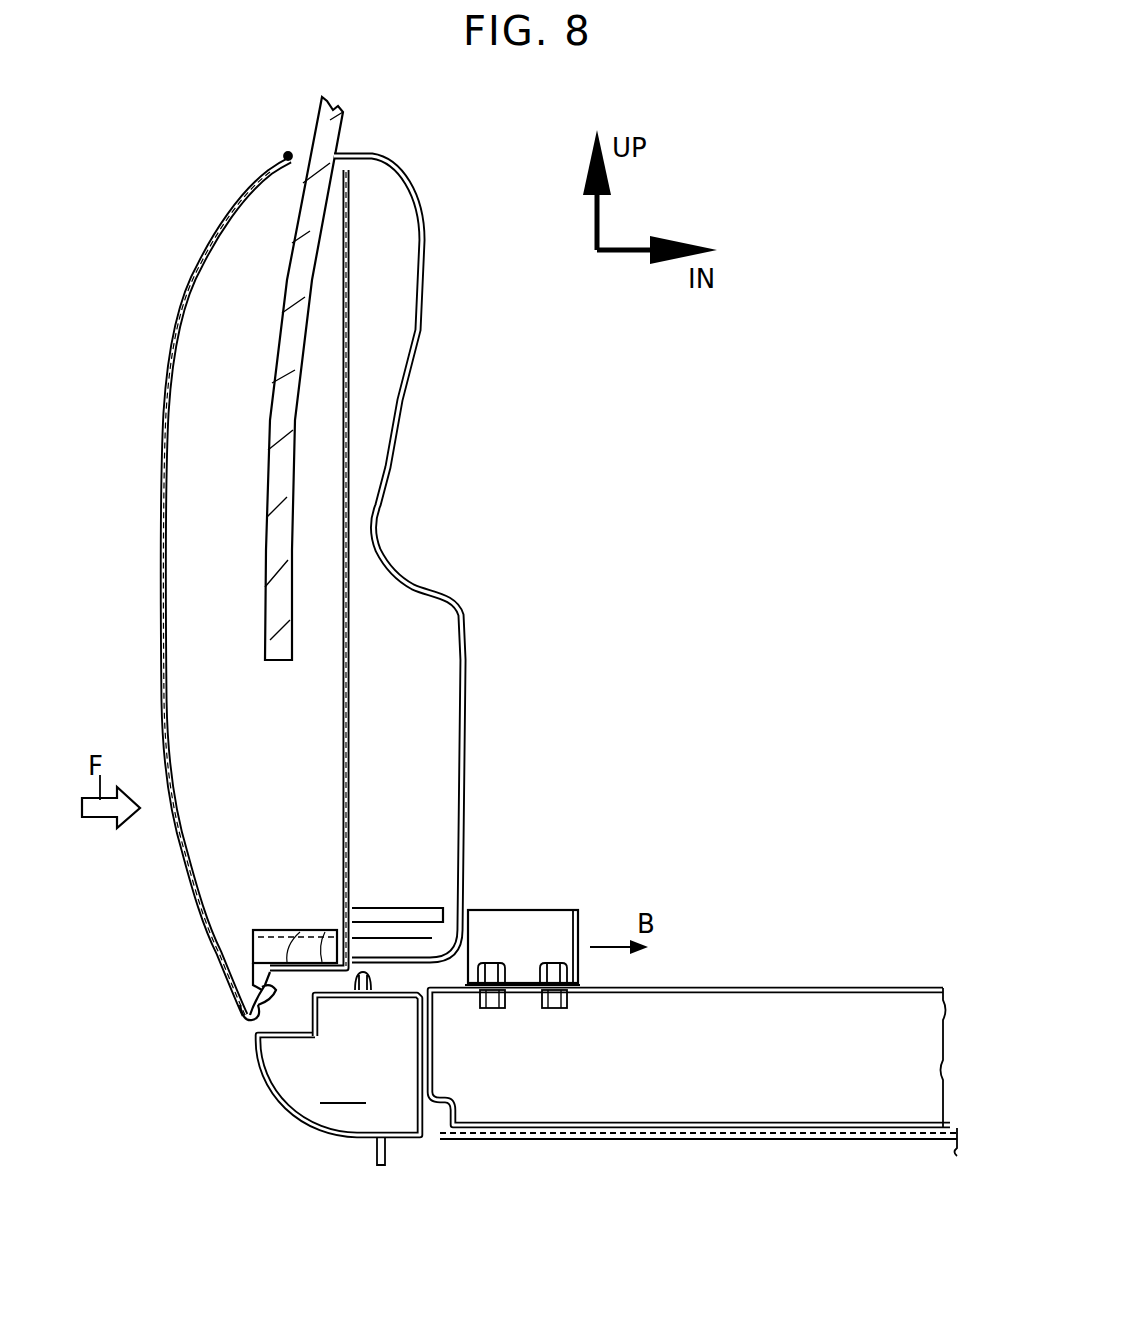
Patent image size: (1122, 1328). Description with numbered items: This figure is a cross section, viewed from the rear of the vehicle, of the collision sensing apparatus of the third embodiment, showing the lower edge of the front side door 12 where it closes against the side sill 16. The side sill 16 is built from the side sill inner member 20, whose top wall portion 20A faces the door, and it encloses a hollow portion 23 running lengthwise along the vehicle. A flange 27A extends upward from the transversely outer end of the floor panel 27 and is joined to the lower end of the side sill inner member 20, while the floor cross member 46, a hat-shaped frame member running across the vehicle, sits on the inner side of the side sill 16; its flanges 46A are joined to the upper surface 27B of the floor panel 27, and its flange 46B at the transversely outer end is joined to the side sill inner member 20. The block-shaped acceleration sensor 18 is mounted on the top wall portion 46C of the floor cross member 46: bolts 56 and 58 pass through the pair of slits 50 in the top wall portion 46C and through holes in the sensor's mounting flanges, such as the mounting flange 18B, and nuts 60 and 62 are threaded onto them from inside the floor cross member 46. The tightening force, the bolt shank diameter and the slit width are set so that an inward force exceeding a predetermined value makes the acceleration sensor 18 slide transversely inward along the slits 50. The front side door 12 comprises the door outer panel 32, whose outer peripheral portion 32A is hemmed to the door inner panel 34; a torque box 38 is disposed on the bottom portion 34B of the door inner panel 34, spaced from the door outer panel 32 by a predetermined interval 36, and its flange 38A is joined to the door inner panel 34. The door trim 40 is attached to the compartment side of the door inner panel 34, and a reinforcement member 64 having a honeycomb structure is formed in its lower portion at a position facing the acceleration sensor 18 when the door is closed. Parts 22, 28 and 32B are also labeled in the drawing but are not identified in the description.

The front side door 12 is at (204, 532).
The side sill 16 is at (345, 1129).
The acceleration sensor 18 is at (554, 942).
The mounting flange 18B is at (580, 935).
The side sill inner member 20 is at (374, 1109).
The top wall portion 20A is at (355, 998).
The side sill outer panel 22 is at (324, 1146).
The hollow portion 23 is at (343, 1088).
The floor panel 27 is at (698, 1113).
The flange 27A is at (453, 1140).
The upper surface 27B is at (700, 1128).
The door inner panel lower portion 28 is at (457, 938).
The door outer panel 32 is at (155, 671).
The outer peripheral portion 32A is at (226, 1008).
The seal lip 32B is at (270, 1005).
The door inner panel 34 is at (338, 683).
The bottom portion 34B is at (284, 954).
The predetermined interval 36 is at (230, 950).
The torque box 38 is at (260, 921).
The flange 38A is at (331, 926).
The door trim 40 is at (472, 655).
The floor cross member 46 is at (692, 1029).
The flanges 46A is at (822, 1125).
The flange 46B is at (433, 1008).
The top wall portion 46C is at (775, 987).
The slits 50 is at (612, 985).
The bolt 56 is at (493, 962).
The bolt 58 is at (555, 962).
The nut 60 is at (482, 1005).
The nut 62 is at (565, 1005).
The reinforcement member 64 is at (397, 908).